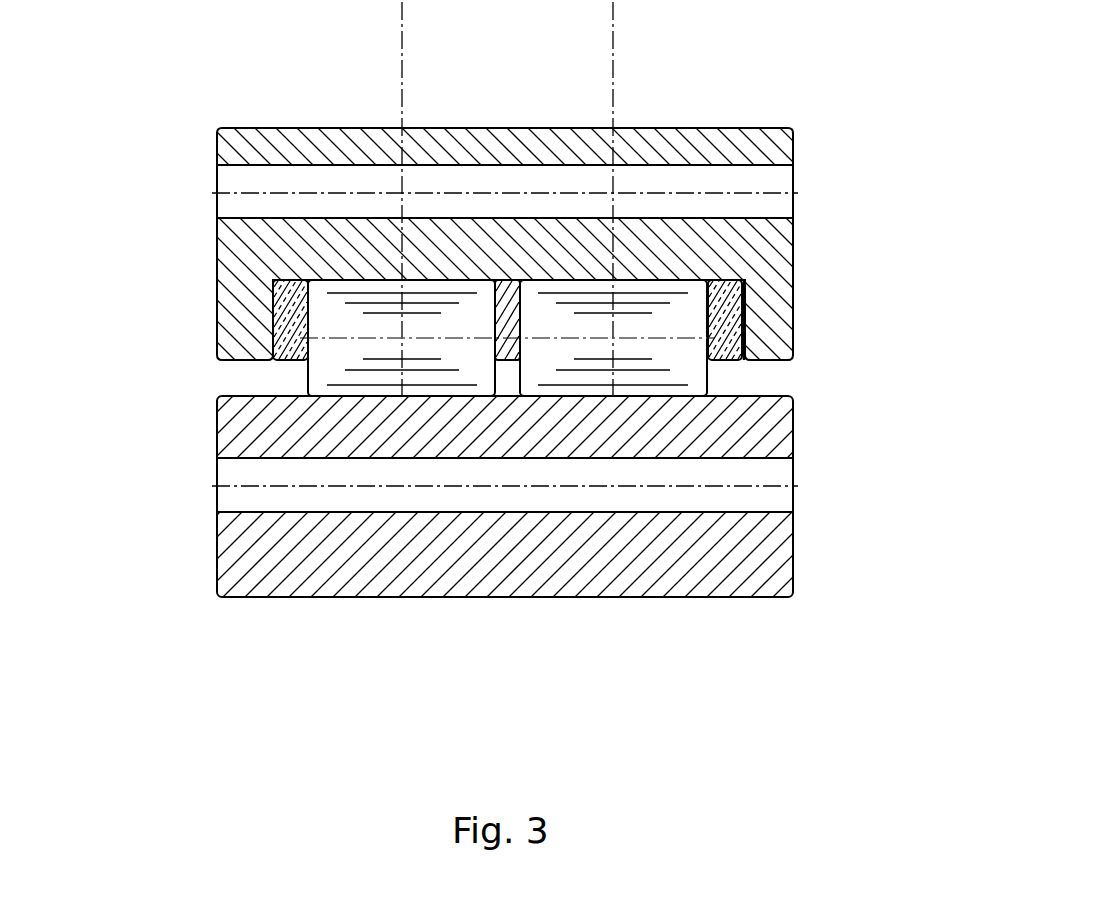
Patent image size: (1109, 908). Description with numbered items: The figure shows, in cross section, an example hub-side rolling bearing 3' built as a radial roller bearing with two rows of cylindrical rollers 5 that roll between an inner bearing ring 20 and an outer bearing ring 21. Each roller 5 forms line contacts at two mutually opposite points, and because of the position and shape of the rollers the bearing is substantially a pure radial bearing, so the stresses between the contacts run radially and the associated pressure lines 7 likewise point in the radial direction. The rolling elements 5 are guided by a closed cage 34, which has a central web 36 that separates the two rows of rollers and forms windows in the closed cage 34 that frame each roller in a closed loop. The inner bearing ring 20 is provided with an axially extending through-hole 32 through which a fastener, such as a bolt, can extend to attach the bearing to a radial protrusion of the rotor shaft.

The outer bearing ring 21 is at (223, 257).
The inner bearing ring 20 is at (225, 565).
The axially extending through-hole 32 is at (227, 498).
The pressure line 7 is at (613, 72).
The cylindrical roller 5 is at (683, 356).
The central web 36 is at (505, 303).
The closed cage 34 is at (727, 318).
The hub-side rolling bearing 3' is at (498, 686).